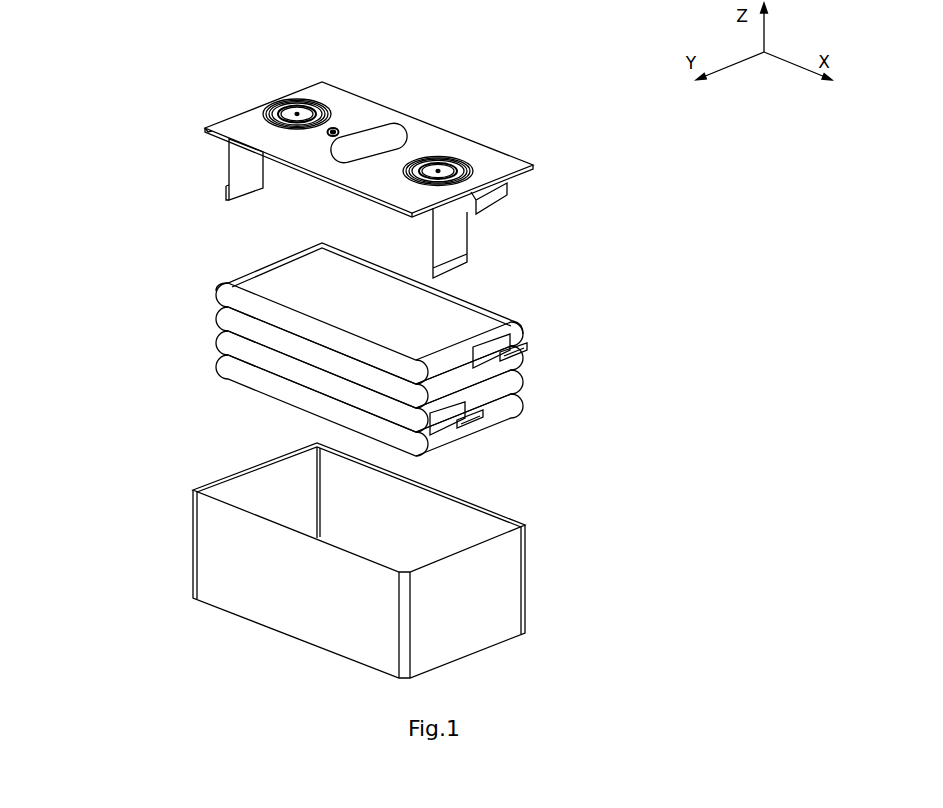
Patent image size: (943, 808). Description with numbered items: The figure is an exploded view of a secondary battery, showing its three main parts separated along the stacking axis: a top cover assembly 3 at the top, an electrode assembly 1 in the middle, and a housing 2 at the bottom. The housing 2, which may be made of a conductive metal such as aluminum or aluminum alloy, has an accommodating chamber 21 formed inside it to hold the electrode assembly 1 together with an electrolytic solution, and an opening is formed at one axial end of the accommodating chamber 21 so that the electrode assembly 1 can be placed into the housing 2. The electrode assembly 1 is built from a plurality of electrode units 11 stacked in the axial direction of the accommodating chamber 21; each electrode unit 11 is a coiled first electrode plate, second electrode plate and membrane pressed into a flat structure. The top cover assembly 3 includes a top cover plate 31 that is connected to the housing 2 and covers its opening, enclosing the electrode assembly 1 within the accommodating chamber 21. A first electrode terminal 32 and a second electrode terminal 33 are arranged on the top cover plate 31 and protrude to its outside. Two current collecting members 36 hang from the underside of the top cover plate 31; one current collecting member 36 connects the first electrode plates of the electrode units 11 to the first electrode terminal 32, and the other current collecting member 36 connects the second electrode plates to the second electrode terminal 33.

The electrode assembly 1 is at (128, 260).
The electrode unit 11 is at (227, 293).
The housing 2 is at (503, 585).
The accommodating chamber 21 is at (472, 520).
The top cover assembly 3 is at (187, 75).
The top cover plate 31 is at (400, 125).
The first electrode terminal 32 is at (294, 104).
The second electrode terminal 33 is at (474, 173).
The current collecting member 36 is at (247, 175).